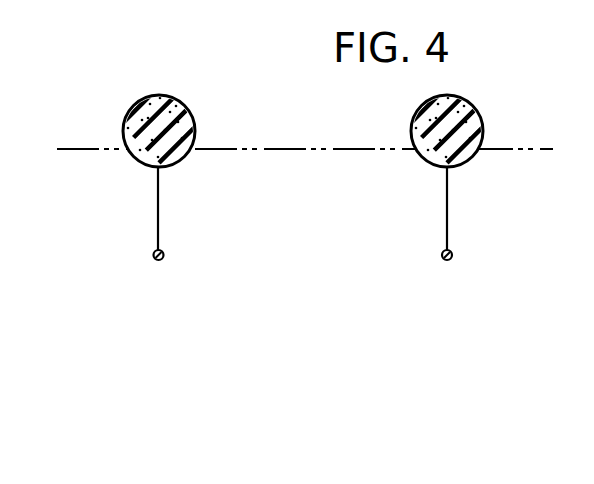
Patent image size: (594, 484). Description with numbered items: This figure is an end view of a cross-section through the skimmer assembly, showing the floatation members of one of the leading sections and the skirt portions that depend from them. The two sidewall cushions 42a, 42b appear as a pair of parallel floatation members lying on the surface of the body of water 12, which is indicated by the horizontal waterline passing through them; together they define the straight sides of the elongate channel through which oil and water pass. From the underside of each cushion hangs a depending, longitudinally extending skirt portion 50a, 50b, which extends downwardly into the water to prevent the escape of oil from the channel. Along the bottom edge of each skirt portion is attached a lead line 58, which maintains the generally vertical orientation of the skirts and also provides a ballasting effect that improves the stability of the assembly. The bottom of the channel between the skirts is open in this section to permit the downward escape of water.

The body of water 12 is at (530, 149).
The sidewall cushion 42a is at (123, 123).
The sidewall cushion 42b is at (412, 125).
The skirt portion 50a is at (157, 217).
The skirt portion 50b is at (446, 212).
The lead line 58 is at (153, 257).